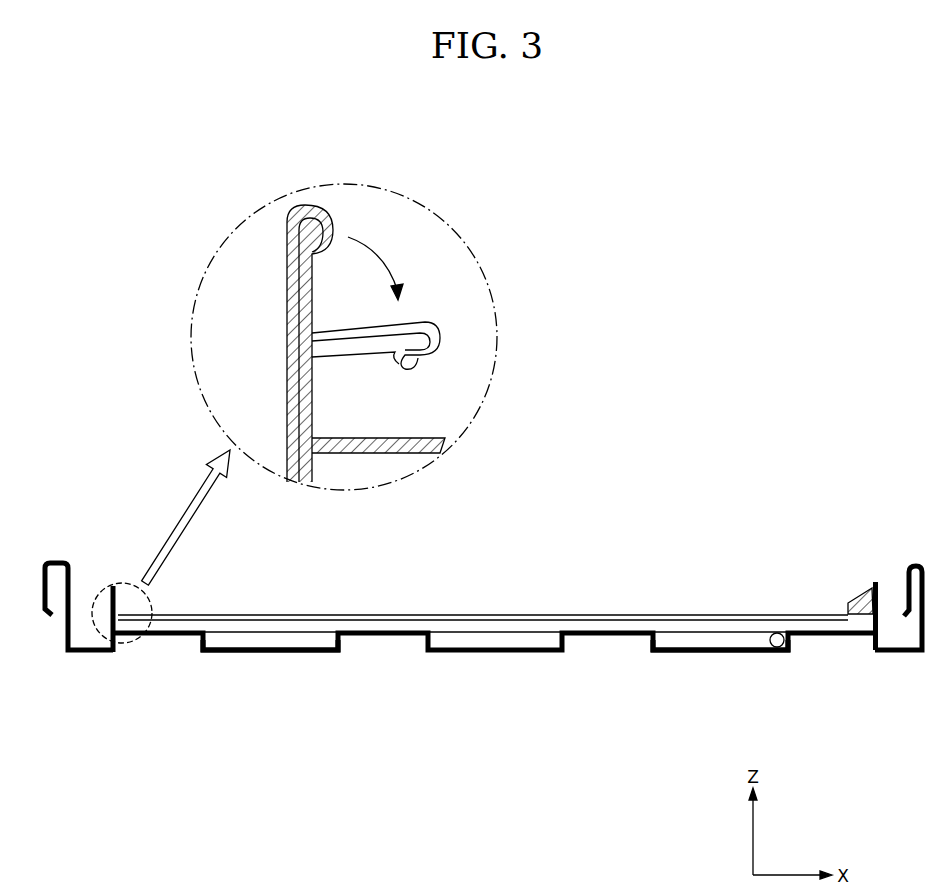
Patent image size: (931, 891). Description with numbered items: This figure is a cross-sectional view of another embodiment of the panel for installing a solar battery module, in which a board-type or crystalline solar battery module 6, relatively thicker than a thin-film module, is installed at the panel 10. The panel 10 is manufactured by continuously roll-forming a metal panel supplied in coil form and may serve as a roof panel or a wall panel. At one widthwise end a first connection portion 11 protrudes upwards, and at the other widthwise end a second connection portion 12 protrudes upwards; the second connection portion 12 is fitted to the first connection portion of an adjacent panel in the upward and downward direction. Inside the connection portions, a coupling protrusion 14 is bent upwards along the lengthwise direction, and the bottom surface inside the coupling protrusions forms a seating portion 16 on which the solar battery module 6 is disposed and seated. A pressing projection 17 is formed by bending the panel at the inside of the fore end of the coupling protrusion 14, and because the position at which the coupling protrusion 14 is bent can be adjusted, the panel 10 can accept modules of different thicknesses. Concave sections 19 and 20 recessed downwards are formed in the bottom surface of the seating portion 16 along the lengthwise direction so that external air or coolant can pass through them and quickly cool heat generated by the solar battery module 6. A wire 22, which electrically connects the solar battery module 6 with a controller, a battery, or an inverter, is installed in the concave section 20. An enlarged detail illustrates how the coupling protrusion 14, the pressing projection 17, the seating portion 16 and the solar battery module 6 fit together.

The solar battery module 6 is at (445, 345).
The panel 10 is at (148, 718).
The first connection portion 11 is at (57, 560).
The second connection portion 12 is at (917, 563).
The coupling protrusion 14 is at (288, 300).
The seating portion 16 is at (445, 440).
The pressing projection 17 is at (333, 228).
The concave section 19 is at (270, 652).
The concave section 20 is at (724, 652).
The wire 22 is at (768, 652).